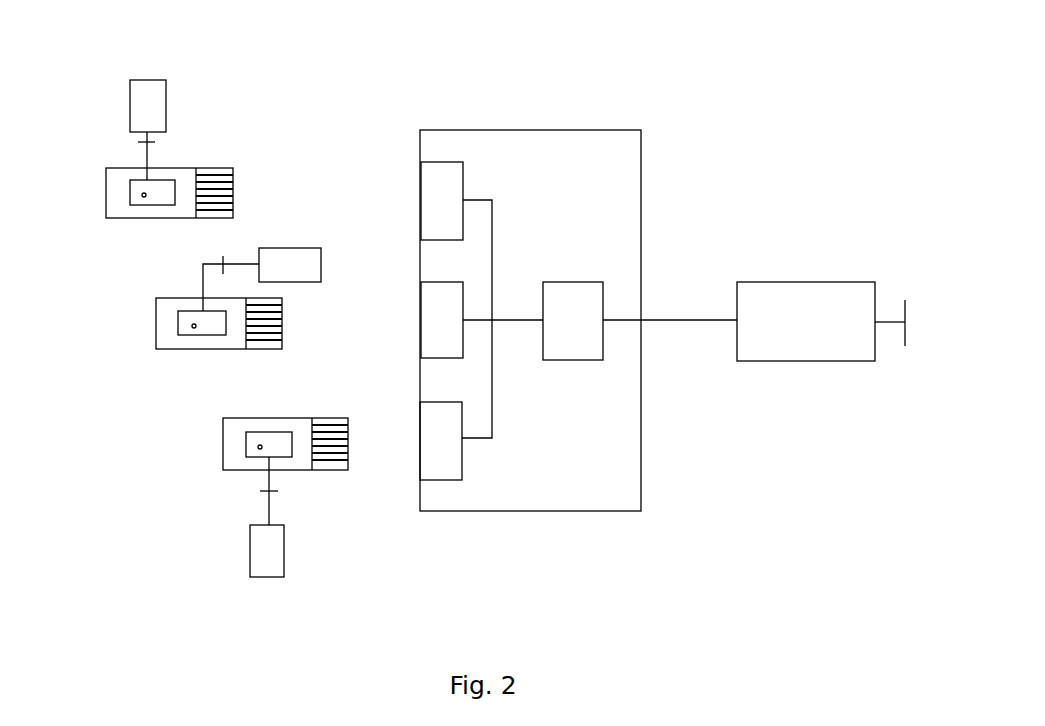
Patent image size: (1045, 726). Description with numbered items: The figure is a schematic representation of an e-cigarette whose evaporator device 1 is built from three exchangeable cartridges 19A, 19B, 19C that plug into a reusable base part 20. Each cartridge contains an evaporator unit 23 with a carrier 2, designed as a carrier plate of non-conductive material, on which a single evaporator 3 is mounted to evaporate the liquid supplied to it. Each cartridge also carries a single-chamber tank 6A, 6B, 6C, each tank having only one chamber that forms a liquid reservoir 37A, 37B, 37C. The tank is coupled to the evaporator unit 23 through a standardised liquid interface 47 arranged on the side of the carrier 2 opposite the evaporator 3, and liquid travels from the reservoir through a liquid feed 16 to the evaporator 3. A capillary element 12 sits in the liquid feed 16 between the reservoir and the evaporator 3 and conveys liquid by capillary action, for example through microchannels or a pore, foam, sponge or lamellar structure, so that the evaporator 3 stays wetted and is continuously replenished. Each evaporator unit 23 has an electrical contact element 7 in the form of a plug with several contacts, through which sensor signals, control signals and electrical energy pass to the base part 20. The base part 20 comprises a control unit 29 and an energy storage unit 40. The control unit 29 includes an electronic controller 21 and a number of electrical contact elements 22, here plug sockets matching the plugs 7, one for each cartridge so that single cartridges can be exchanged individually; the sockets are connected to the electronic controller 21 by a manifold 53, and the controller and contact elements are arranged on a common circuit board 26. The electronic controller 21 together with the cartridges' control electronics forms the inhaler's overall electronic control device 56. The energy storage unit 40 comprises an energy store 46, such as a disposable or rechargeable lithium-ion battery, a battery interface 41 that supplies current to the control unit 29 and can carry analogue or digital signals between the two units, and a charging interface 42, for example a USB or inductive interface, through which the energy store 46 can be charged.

The evaporator device 1 is at (273, 599).
The carrier 2 is at (128, 219).
The evaporator 3 is at (142, 195).
The single-chamber tank 6A is at (193, 106).
The single-chamber tank 6B is at (306, 263).
The single-chamber tank 6C is at (310, 589).
The electrical contact element 7 is at (233, 185).
The capillary element 12 is at (147, 178).
The liquid feed 16 is at (147, 150).
The cartridge 19A is at (291, 107).
The cartridge 19B is at (337, 251).
The cartridge 19C is at (183, 516).
The base part 20 is at (636, 616).
The electronic controller 21 is at (572, 320).
The electrical contact element 22 is at (442, 200).
The evaporator unit 23 is at (100, 210).
The circuit board 26 is at (600, 512).
The control unit 29 is at (516, 518).
The liquid reservoir 37A is at (148, 105).
The liquid reservoir 37B is at (289, 264).
The liquid reservoir 37C is at (270, 553).
The energy storage unit 40 is at (806, 371).
The battery interface 41 is at (735, 318).
The charging interface 42 is at (905, 300).
The energy store 46 is at (790, 337).
The liquid interface 47 is at (155, 142).
The manifold 53 is at (493, 365).
The electronic control device 56 is at (584, 285).